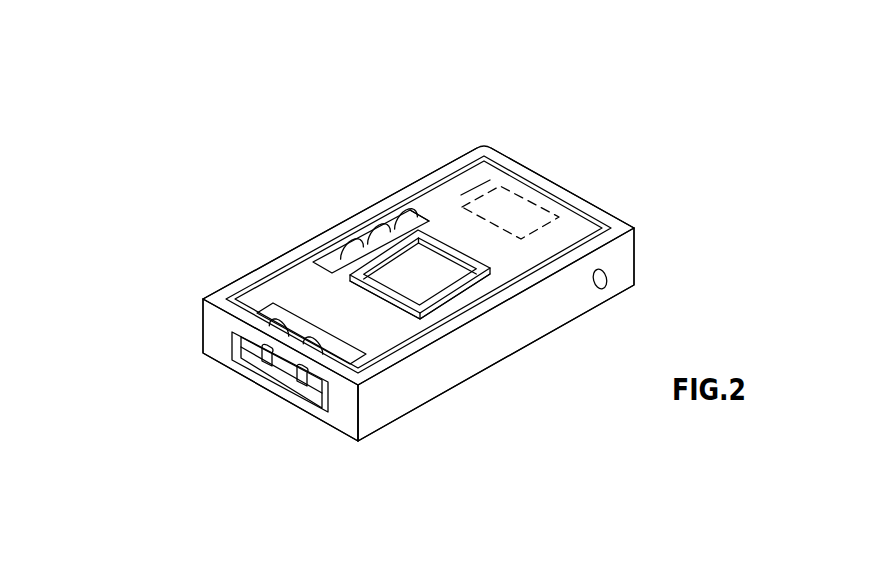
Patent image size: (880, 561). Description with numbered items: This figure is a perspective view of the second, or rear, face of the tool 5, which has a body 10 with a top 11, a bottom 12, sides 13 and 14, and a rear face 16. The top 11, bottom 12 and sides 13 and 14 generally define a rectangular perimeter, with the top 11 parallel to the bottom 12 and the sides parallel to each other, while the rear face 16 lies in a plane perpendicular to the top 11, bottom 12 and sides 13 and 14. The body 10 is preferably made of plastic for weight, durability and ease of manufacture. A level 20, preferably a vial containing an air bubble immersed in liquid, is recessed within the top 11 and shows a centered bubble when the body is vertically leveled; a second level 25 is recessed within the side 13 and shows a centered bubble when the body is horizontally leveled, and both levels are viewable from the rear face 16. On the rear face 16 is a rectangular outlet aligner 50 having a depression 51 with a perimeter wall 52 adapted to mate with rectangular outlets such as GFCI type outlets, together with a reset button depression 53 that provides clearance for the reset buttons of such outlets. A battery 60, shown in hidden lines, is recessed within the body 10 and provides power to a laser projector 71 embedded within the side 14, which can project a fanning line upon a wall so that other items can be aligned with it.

The tool 5 is at (160, 130).
The body 10 is at (333, 220).
The top 11 is at (340, 413).
The bottom 12 is at (516, 160).
The side 13 is at (272, 258).
The side 14 is at (480, 370).
The rear face 16 is at (395, 215).
The level 20 is at (270, 357).
The level 25 is at (372, 240).
The rectangular outlet aligner 50 is at (459, 197).
The depression 51 is at (480, 185).
The perimeter wall 52 is at (440, 205).
The reset button depression 53 is at (447, 292).
The battery 60 is at (560, 207).
The laser projector 71 is at (607, 281).